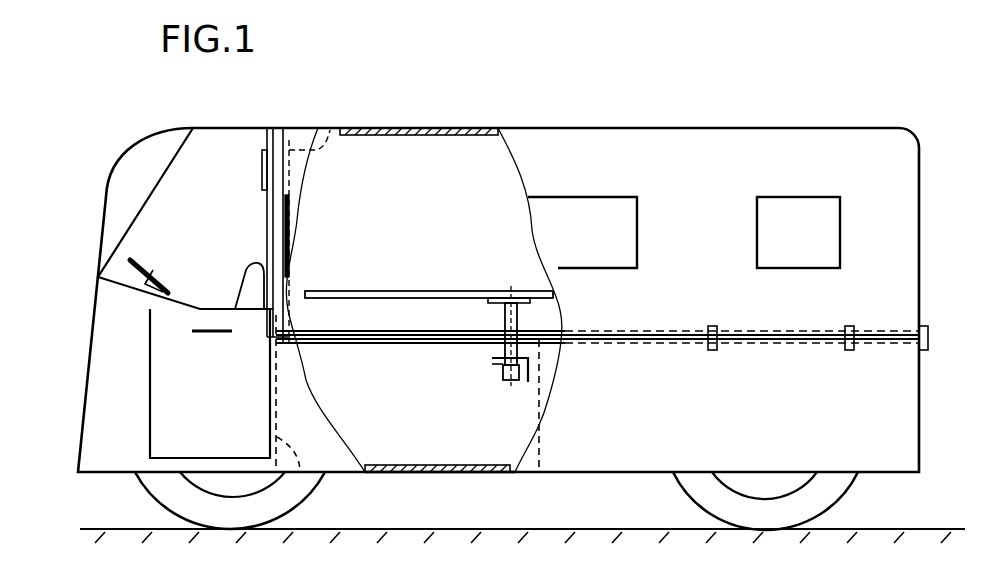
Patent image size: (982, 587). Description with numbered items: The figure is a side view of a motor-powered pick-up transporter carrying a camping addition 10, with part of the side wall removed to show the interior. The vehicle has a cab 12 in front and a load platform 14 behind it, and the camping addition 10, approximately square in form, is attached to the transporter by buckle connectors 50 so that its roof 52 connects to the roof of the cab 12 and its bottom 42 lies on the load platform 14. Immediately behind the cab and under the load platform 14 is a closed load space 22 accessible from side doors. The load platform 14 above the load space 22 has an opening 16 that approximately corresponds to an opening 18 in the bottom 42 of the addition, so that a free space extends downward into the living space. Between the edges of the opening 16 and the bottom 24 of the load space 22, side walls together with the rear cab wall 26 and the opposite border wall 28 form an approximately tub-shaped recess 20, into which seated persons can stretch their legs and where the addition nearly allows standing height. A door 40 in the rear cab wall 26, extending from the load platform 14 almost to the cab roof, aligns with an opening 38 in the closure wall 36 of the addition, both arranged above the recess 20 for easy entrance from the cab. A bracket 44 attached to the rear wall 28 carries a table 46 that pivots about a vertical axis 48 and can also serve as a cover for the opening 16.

The camping addition 10 is at (566, 126).
The cab 12 is at (231, 128).
The load platform 14 is at (640, 344).
The opening 16 is at (370, 346).
The opening 18 is at (402, 333).
The recess 20 is at (427, 405).
The load space 22 is at (524, 470).
The bottom 24 is at (440, 472).
The rear cab wall 26 is at (308, 480).
The border wall 28 is at (540, 432).
The closure wall 36 is at (318, 128).
The opening 38 is at (290, 226).
The door 40 is at (265, 202).
The bottom 42 is at (633, 330).
The bracket 44 is at (492, 362).
The table 46 is at (400, 291).
The vertical axis 48 is at (506, 292).
The buckle connectors 50 is at (714, 350).
The roof 52 is at (688, 128).